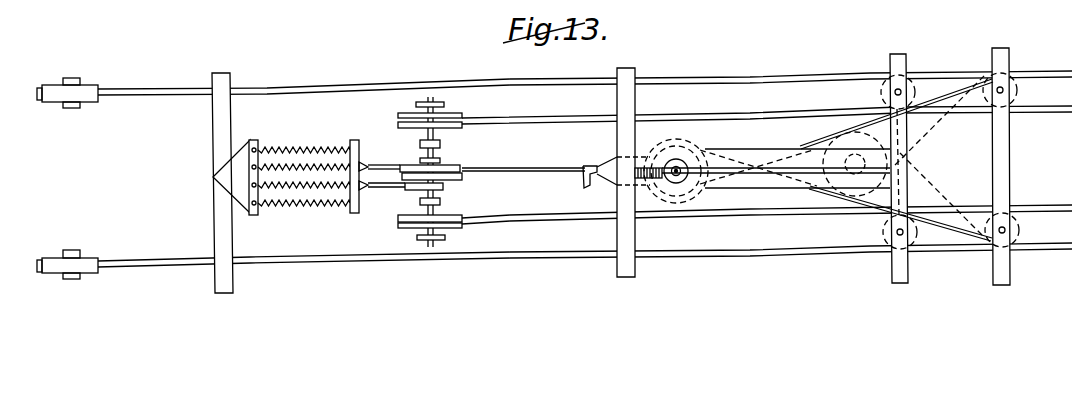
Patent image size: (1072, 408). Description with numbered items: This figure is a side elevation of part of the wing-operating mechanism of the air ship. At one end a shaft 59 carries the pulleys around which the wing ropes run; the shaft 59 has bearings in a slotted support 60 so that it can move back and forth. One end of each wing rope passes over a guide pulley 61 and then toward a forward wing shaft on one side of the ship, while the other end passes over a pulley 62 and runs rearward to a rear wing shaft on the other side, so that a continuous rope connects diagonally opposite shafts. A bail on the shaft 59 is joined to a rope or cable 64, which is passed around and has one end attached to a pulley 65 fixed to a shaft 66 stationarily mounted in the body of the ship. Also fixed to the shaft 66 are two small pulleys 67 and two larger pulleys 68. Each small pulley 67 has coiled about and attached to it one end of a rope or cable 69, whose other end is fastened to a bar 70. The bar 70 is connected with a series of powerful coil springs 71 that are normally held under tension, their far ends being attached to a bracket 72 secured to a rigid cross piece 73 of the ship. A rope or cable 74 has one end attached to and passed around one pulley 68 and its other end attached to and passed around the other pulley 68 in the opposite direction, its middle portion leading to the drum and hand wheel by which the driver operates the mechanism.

The shaft 59 is at (679, 166).
The slotted support 60 is at (753, 143).
The guide pulley 61 is at (1018, 90).
The pulley 62 is at (910, 83).
The rope or cable 64 is at (556, 167).
The pulley 65 is at (444, 181).
The shaft 66 is at (440, 137).
The small pulleys 67 is at (424, 160).
The larger pulleys 68 is at (450, 113).
The ropes or cables 69 is at (335, 232).
The bar 70 is at (350, 141).
The coil springs 71 is at (288, 136).
The bracket 72 is at (228, 177).
The cross piece 73 is at (212, 142).
The rope or cable 74 is at (574, 109).